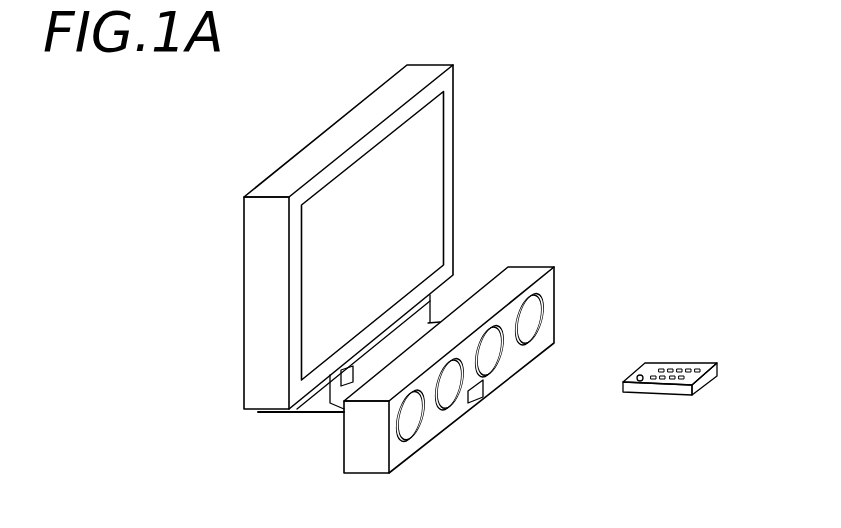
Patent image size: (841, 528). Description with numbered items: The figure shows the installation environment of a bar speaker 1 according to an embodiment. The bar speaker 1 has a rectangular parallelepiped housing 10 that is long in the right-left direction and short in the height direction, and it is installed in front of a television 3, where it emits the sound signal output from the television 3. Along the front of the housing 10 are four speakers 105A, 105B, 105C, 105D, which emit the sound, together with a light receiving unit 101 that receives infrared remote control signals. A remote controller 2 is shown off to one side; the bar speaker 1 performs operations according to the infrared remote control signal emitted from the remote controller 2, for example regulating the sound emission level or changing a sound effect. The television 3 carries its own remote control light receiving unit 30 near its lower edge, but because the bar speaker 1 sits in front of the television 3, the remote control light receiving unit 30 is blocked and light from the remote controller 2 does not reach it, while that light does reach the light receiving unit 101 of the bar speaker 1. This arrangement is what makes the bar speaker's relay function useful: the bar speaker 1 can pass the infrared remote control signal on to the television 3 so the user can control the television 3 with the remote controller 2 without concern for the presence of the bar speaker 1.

The bar speaker 1 is at (572, 298).
The remote controller 2 is at (704, 362).
The television 3 is at (243, 197).
The housing 10 is at (508, 267).
The remote control light receiving unit 30 is at (343, 383).
The light receiving unit 101 is at (477, 403).
The speaker 105A is at (533, 325).
The speaker 105B is at (495, 357).
The speaker 105C is at (457, 397).
The speaker 105D is at (412, 423).